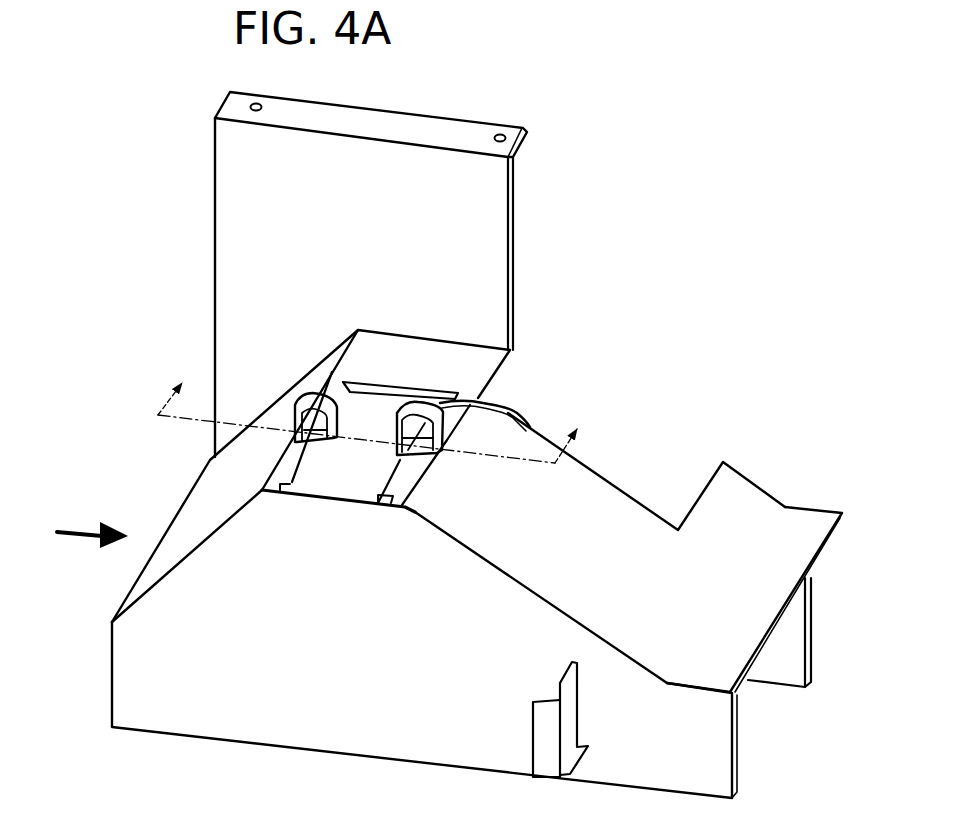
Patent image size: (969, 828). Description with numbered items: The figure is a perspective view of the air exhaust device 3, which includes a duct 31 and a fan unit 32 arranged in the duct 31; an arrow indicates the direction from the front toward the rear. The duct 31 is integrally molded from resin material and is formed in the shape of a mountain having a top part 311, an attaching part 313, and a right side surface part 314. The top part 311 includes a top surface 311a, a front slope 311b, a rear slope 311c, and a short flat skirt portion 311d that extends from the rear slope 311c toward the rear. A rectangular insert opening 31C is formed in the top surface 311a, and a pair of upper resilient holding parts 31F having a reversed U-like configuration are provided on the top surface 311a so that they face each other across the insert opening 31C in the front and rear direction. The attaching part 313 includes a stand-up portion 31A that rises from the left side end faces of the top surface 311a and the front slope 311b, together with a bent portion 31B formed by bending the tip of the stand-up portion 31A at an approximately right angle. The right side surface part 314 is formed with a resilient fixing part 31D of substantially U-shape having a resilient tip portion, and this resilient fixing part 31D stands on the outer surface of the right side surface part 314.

The air exhaust device 3 is at (733, 200).
The duct 31 is at (101, 492).
The top part 311 is at (755, 468).
The top surface 311a is at (470, 374).
The front slope 311b is at (137, 580).
The rear slope 311c is at (610, 504).
The short flat skirt portion 311d is at (803, 526).
The attaching part 313 is at (194, 210).
The right side surface part 314 is at (207, 725).
The stand-up portion 31A is at (242, 243).
The bent portion 31B is at (430, 135).
The insert opening 31C is at (308, 472).
The resilient fixing part 31D is at (550, 768).
The upper resilient holding parts 31F is at (317, 403).
The fan unit 32 is at (354, 490).